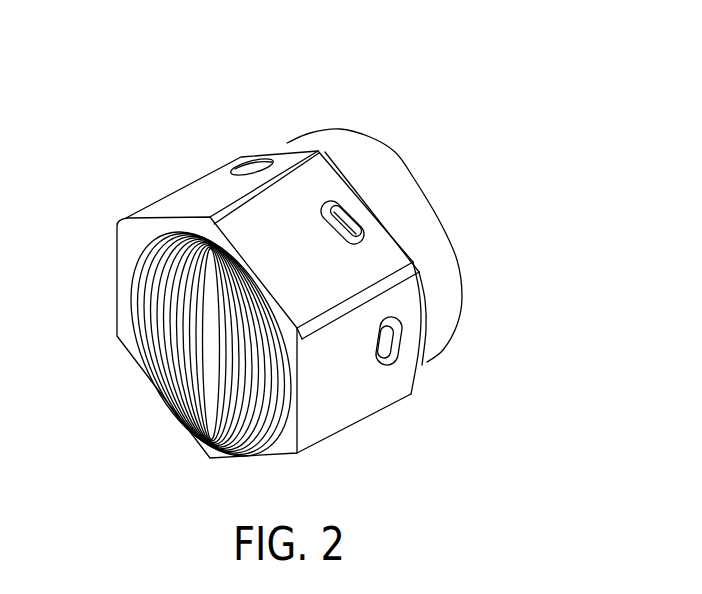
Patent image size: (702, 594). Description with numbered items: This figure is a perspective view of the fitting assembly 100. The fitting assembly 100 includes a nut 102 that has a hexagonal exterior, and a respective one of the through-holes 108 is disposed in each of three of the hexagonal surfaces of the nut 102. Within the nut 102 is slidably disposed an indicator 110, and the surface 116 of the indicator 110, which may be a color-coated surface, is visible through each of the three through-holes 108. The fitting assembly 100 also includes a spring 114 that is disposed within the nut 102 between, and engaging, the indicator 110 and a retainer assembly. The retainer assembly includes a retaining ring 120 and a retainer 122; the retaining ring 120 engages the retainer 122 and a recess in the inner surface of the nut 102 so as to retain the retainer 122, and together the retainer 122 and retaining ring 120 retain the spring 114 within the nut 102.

The fitting assembly 100 is at (432, 88).
The nut 102 is at (328, 147).
The through-holes 108 is at (256, 168).
The indicator 110 is at (243, 305).
The spring 114 is at (210, 343).
The surface 116 is at (378, 233).
The retaining ring 120 is at (145, 268).
The retainer 122 is at (174, 343).